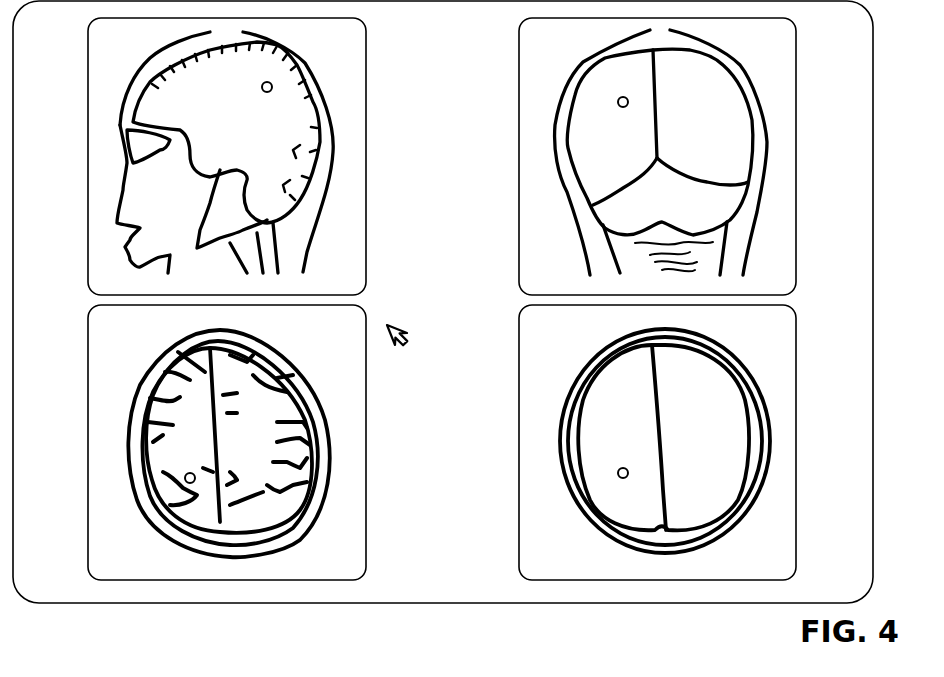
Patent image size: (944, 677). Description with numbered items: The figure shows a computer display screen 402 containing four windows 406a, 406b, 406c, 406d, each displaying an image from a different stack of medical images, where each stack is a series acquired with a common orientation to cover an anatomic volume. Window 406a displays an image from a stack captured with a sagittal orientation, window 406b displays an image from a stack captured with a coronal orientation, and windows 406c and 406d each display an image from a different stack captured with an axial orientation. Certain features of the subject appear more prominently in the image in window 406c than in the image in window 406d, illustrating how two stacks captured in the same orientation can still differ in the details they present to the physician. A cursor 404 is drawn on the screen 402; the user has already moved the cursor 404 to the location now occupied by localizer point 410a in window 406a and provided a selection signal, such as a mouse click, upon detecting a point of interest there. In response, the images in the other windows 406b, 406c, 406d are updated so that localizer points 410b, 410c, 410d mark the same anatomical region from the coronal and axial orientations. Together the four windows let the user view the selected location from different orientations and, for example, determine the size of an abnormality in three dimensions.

The screen 402 is at (632, 603).
The cursor 404 is at (410, 338).
The window 406a is at (366, 190).
The window 406b is at (796, 188).
The window 406c is at (366, 470).
The window 406d is at (796, 470).
The localizer point 410a is at (281, 93).
The localizer point 410b is at (608, 104).
The localizer point 410c is at (178, 468).
The localizer point 410d is at (608, 468).